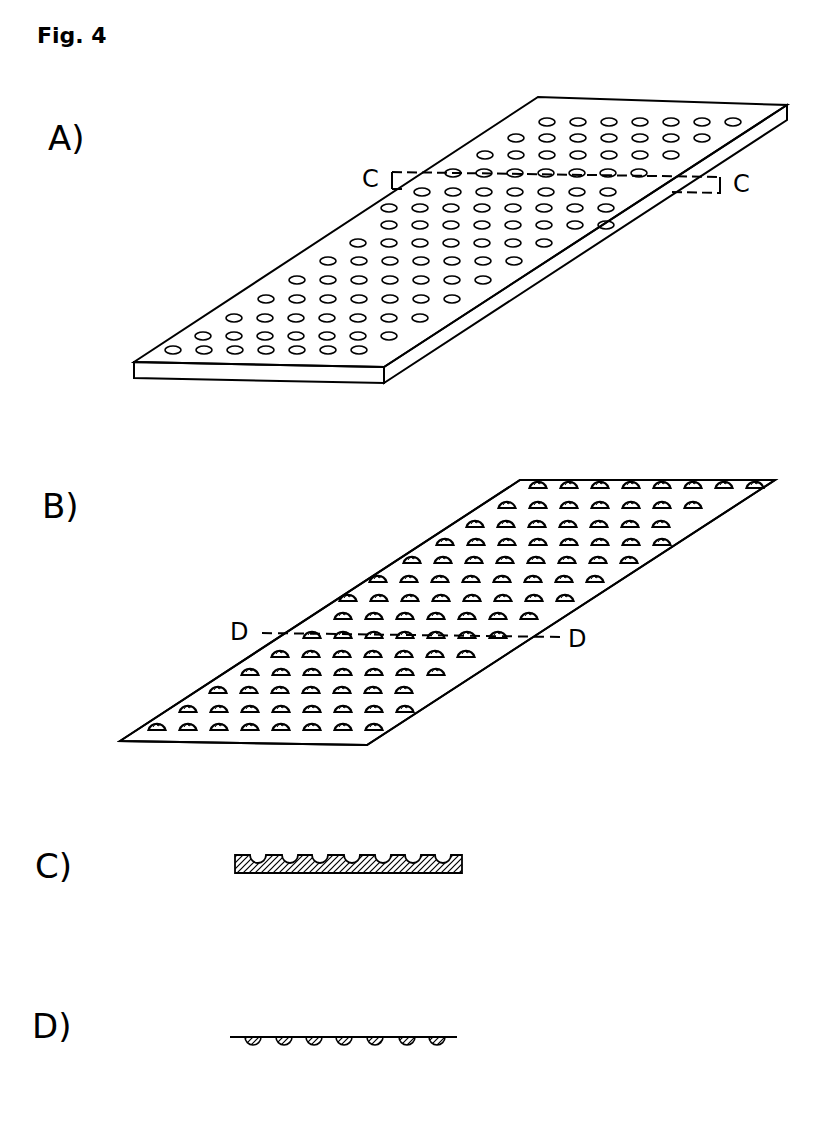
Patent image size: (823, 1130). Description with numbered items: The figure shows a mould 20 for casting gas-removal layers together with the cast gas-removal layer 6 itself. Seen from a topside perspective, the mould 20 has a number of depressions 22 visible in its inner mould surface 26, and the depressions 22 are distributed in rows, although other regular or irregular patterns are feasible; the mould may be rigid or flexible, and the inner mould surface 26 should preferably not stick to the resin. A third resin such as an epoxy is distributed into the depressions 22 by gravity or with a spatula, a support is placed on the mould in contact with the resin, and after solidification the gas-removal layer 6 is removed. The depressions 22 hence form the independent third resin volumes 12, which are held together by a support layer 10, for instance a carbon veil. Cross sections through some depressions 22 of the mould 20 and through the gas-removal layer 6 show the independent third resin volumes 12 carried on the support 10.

The mould 20 is at (460, 520).
The depressions 22 is at (482, 263).
The inner mould surface 26 is at (435, 310).
The gas-removal layer 6 is at (303, 562).
The support layer 10 is at (440, 698).
The independent third resin volumes 12 is at (573, 603).